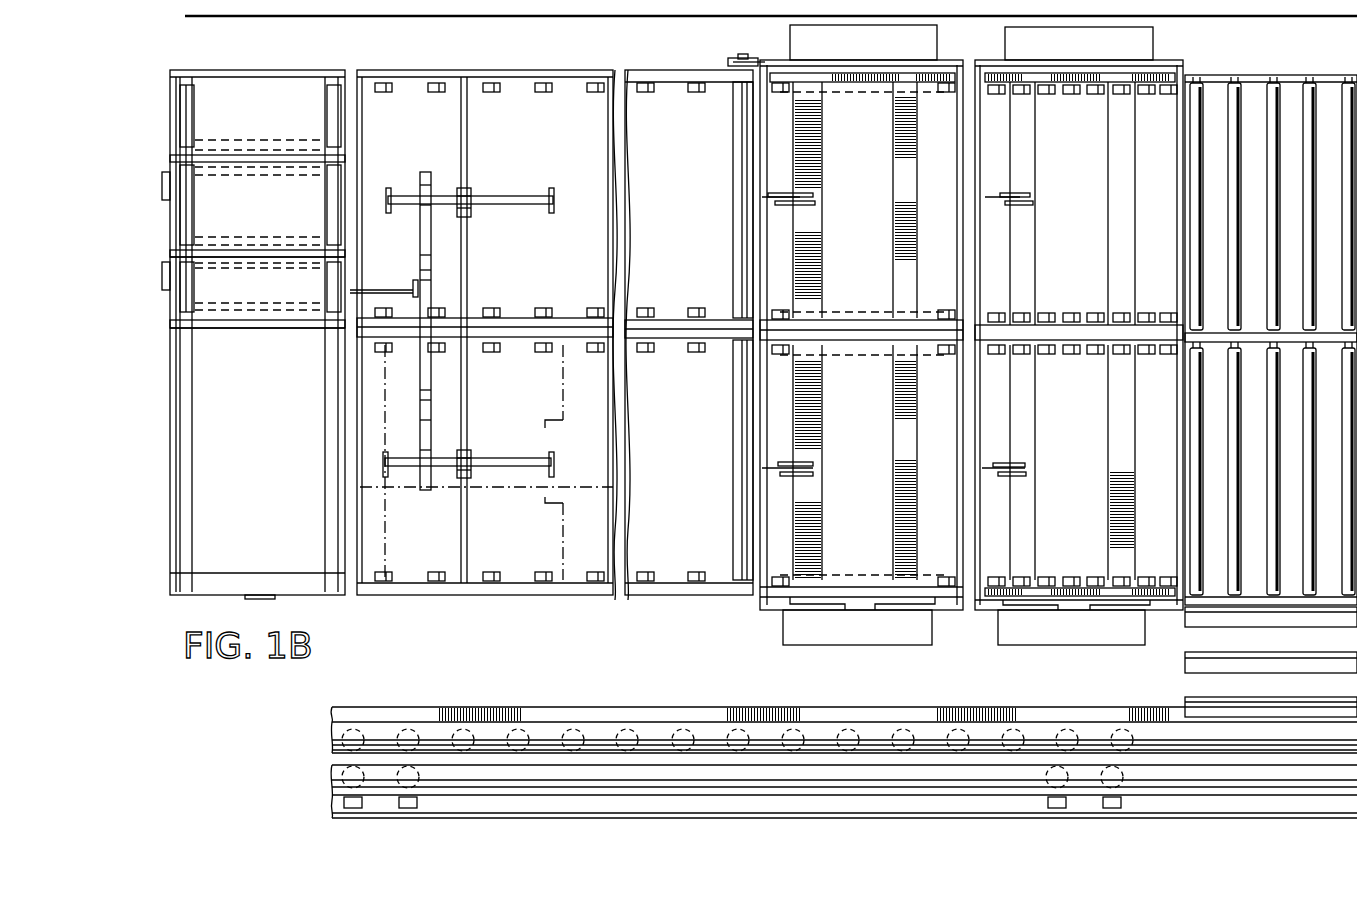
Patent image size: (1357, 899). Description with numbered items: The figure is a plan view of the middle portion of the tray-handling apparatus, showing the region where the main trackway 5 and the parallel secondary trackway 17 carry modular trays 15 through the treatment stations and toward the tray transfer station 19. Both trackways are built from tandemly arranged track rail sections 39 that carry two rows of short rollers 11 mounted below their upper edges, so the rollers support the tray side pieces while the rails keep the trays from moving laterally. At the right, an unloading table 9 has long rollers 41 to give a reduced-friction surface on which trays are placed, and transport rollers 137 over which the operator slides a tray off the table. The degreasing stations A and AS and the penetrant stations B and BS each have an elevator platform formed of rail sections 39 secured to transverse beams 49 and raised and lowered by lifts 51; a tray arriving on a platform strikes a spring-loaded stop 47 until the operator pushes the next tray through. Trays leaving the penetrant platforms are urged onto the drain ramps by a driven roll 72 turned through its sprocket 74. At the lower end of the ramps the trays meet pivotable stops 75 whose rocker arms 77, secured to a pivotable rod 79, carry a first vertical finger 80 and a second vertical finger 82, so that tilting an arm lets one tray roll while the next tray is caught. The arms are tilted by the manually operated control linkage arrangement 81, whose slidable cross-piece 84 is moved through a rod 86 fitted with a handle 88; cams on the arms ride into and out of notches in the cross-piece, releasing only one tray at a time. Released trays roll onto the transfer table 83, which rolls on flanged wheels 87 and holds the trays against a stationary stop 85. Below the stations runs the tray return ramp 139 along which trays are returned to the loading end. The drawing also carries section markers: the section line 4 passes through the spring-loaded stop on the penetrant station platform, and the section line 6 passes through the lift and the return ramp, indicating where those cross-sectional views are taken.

The tray transfer station 19 is at (265, 66).
The track rail section 39 is at (487, 76).
The secondary trackway 17 is at (634, 66).
The sprocket 74 is at (745, 58).
The short rollers 11 is at (495, 92).
The unloading table 9 is at (355, 133).
The second vertical finger 82 is at (388, 188).
The rocker arm 77 is at (492, 200).
The first vertical finger 80 is at (556, 200).
The pivotable stop 75 is at (512, 216).
The slidable cross-piece 84 is at (420, 243).
The control linkage arrangement 81 is at (445, 282).
The flanged wheels 87 is at (352, 277).
The stationary stop 85 is at (180, 185).
The transfer table 83 is at (322, 182).
The handle 88 is at (190, 255).
The rod 86 is at (225, 325).
The driven roll 72 is at (738, 200).
The spring-loaded stop 47 is at (805, 195).
The long rollers 41 is at (1240, 210).
The pivotable rod 79 is at (468, 392).
The modular tray 15 is at (563, 430).
The main trackway 5 is at (368, 460).
The section line 4- 4 is at (860, 487).
The section line 6- 6 is at (963, 845).
The transverse beam 49 is at (1020, 527).
The lift 51 is at (848, 637).
The tray return ramp 139 is at (1062, 708).
The transport rollers 137 is at (1298, 670).